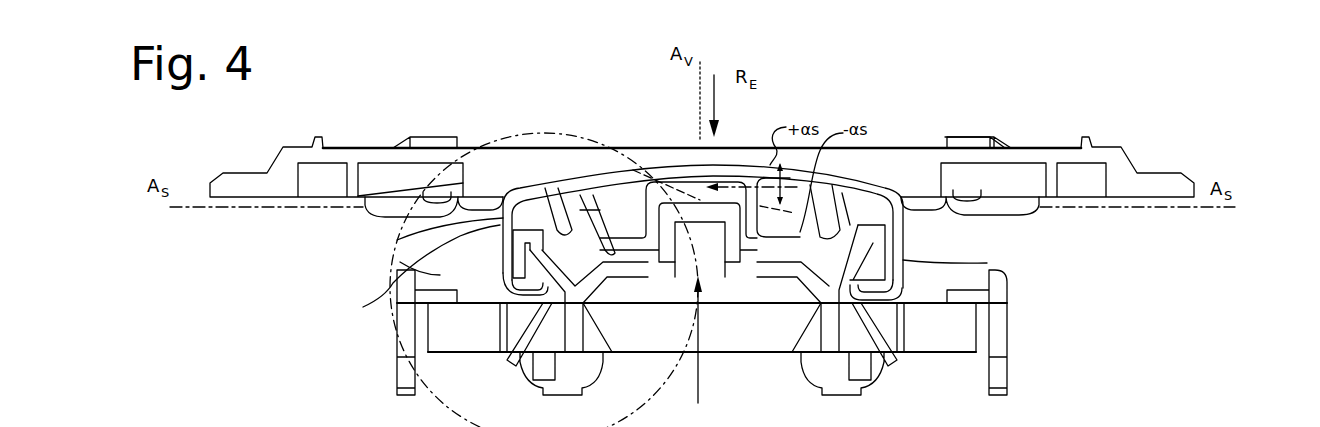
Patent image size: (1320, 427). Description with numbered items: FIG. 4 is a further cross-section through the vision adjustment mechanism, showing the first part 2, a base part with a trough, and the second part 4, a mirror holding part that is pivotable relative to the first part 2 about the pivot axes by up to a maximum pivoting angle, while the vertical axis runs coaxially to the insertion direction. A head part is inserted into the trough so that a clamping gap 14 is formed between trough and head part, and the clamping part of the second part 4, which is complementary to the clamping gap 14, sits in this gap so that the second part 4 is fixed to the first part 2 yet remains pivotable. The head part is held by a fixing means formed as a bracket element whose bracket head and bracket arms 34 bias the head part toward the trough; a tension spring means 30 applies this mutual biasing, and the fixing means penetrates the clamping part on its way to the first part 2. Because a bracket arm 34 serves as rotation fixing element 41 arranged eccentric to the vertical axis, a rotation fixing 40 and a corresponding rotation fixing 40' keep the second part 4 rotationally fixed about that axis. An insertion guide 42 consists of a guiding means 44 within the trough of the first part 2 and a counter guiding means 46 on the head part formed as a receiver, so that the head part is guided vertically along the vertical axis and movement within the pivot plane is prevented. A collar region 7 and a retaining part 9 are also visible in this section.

The first part 2 is at (363, 307).
The second part 4 is at (1063, 157).
The collar region 7 is at (573, 235).
The retaining part 9 is at (963, 157).
The clamping gap 14 is at (400, 262).
The tension spring means 30 is at (397, 240).
The bracket arm 34 is at (850, 210).
The rotation fixing 40 is at (694, 326).
The stepped bracket 40' is at (689, 164).
The rotation fixing element 41 is at (470, 203).
The insertion guide 42 is at (691, 351).
The guiding means 44 is at (705, 243).
The counter guiding means 46 is at (725, 218).